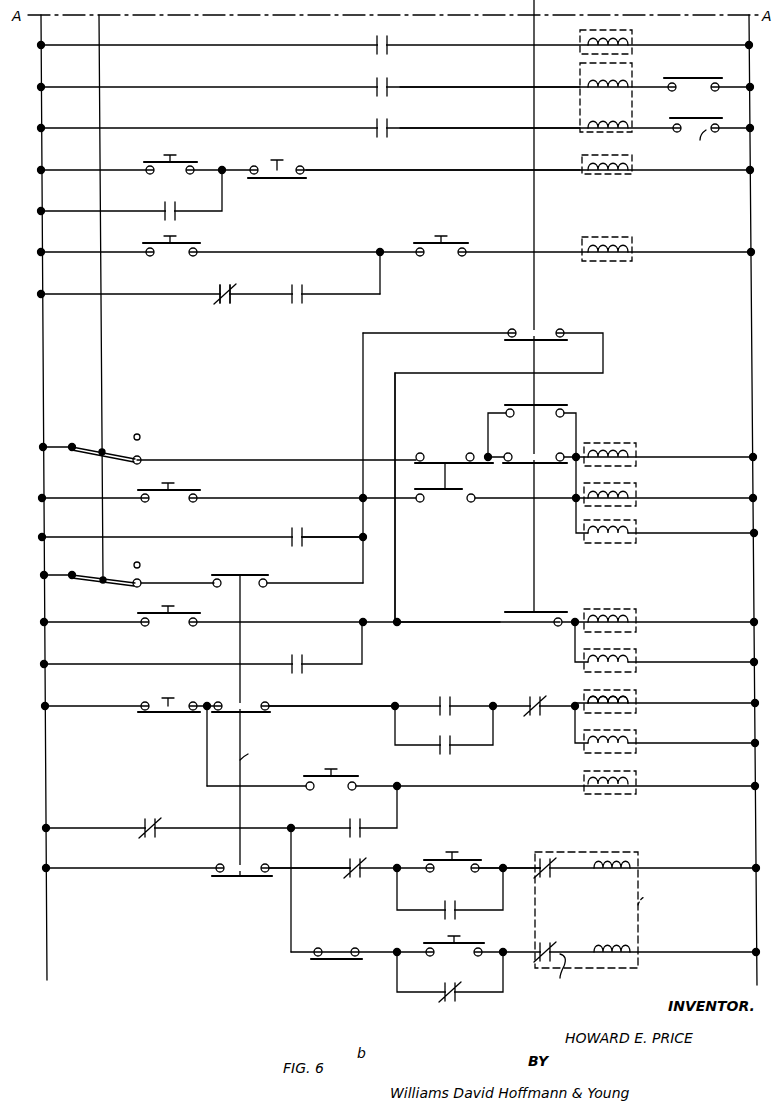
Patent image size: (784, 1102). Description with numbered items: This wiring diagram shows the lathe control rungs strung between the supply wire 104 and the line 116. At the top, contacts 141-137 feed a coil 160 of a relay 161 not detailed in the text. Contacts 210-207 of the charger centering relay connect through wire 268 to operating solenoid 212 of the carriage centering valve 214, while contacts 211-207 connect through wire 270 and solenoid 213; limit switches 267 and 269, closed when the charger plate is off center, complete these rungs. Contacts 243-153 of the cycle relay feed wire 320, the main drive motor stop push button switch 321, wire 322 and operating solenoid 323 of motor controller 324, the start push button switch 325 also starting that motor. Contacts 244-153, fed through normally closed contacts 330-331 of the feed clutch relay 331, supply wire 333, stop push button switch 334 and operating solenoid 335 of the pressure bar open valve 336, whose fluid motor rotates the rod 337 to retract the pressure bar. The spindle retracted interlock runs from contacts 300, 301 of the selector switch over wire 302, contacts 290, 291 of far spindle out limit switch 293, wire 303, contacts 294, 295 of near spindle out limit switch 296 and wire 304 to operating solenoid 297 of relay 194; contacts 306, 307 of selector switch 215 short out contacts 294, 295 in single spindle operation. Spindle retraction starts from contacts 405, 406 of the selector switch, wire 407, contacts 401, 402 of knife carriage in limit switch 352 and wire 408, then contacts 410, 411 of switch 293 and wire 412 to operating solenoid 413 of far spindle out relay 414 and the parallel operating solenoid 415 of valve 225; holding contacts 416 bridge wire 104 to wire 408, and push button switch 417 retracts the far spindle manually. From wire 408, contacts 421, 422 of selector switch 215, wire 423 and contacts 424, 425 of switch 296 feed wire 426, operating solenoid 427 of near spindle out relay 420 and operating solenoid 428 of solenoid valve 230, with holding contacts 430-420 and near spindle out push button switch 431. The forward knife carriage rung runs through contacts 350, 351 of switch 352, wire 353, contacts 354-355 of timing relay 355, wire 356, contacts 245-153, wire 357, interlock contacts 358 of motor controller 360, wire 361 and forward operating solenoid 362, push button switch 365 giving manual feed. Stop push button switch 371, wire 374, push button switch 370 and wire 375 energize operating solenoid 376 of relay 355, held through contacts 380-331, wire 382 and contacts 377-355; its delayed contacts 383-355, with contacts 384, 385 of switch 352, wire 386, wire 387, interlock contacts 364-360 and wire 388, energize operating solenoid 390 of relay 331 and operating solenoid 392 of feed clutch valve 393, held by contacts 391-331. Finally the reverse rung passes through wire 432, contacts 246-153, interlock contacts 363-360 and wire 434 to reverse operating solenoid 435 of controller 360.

The wire 104 is at (44, 382).
The line 116 is at (752, 338).
The selector switch 215 is at (540, 290).
The relay contact 141-137 is at (387, 34).
The relay coil 160 is at (586, 38).
The relay 161 is at (625, 34).
The contacts of charger centering relay 210-207 is at (387, 76).
The wire 268 is at (485, 76).
The operating solenoid 212 is at (586, 80).
The limit switch 267 is at (684, 78).
The contacts of charger centering relay 211-207 is at (387, 117).
The wire 270 is at (519, 130).
The operating solenoid 213 is at (586, 122).
The solenoid operated valve 214 is at (634, 124).
The limit switch 269 is at (713, 141).
The start push button switch 325 is at (172, 153).
The wire 320 is at (215, 168).
The main drive motor stop push button switch 321 is at (280, 158).
The wire 322 is at (488, 175).
The operating solenoid 323 is at (590, 168).
The motor controller 324 is at (632, 160).
The contacts of cycle relay 243-153 is at (185, 192).
The rod 337 is at (190, 242).
The stop push button switch 334 is at (444, 234).
The wire 333 is at (382, 282).
The contacts of lathe feed clutch relay 330-331 is at (228, 283).
The lathe feed clutch relay 331 is at (262, 310).
The contacts of cycle relay 244-153 is at (296, 306).
The operating solenoid 335 is at (590, 248).
The pressure bar open valve 336 is at (632, 236).
The contacts of selector switch 421 is at (508, 331).
The contacts of selector switch 422 is at (558, 325).
The near spindle out limit switch 296 is at (496, 558).
The contacts of selector switch 306 is at (498, 408).
The contacts of selector switch 307 is at (566, 410).
The wire 303 is at (482, 419).
The wire 302 is at (222, 454).
The contacts of selector switch 300 is at (88, 436).
The contacts of selector switch 301 is at (143, 450).
The contacts of far spindle out limit switch 290 is at (433, 448).
The contacts of far spindle out limit switch 291 is at (478, 448).
The contacts of near spindle out limit switch 294 is at (516, 448).
The contacts of near spindle out limit switch 295 is at (566, 448).
The operating solenoid 297 is at (620, 442).
The relay 194 is at (634, 448).
The far spindle out limit switch 293 is at (450, 480).
The wire 304 is at (572, 470).
The far spindle out push button switch 417 is at (172, 484).
The contacts of far spindle out limit switch 410 is at (424, 500).
The contacts of far spindle out limit switch 411 is at (467, 504).
The operating solenoid 413 is at (616, 490).
The relay 414 is at (636, 492).
The wire 412 is at (570, 522).
The operating solenoid 415 is at (618, 527).
The valve 225 is at (636, 530).
The contacts of relay 416 is at (292, 529).
The wire 408 is at (360, 536).
The contacts of selector switch 405 is at (88, 564).
The contacts of selector switch 406 is at (142, 577).
The wire 407 is at (212, 572).
The contacts of knife carriage in limit switch 401 is at (213, 588).
The contacts of knife carriage in limit switch 402 is at (263, 588).
The near spindle out push button switch 431 is at (138, 606).
The wire 423 is at (428, 630).
The contacts of near spindle out limit switch 424 is at (566, 634).
The contacts of near spindle out limit switch 425 is at (560, 630).
The operating solenoid 427 is at (610, 614).
The near spindle out relay 420 is at (636, 616).
The wire 426 is at (570, 658).
The operating solenoid 428 is at (618, 656).
The solenoid valve 230 is at (636, 660).
The contacts of near spindle out relay 430-420 is at (292, 653).
The stop push button switch 371 is at (152, 700).
The contacts of knife carriage in limit switch 384 is at (224, 692).
The contacts of knife carriage in limit switch 385 is at (265, 700).
The wire 386 is at (306, 704).
The delayed closing contacts of timer relay 383-355 is at (446, 694).
The interlock contacts of motor controller 364-360 is at (536, 694).
The operating solenoid 390 is at (618, 696).
The wire 388 is at (570, 740).
The wire 387 is at (493, 735).
The contacts of feed clutch relay 391-331 is at (445, 757).
The operating solenoid 392 is at (618, 736).
The feed clutch valve 393 is at (636, 740).
The knife carriage in limit switch 352 is at (257, 753).
The wire 374 is at (254, 784).
The push button switch 370 is at (344, 764).
The operating solenoid 376 is at (618, 777).
The timing relay 355 is at (636, 782).
The contacts of feed clutch relay 380-331 is at (150, 816).
The wire 382 is at (274, 818).
The relay contact 377-355 is at (355, 817).
The wire 375 is at (399, 822).
The contacts of knife into depth limit switch 350 is at (215, 862).
The contacts of knife into depth limit switch 351 is at (262, 862).
The wire 353 is at (320, 866).
The contacts of timing relay 354-355 is at (348, 850).
The knife carriage in push button switch 365 is at (452, 850).
The wire 357 is at (522, 866).
The wire 356 is at (398, 905).
The contacts of cycle relay 245-153 is at (448, 898).
The interlock contacts of motor controller 358 is at (552, 846).
The wire 361 is at (584, 868).
The forward operating solenoid 362 is at (628, 860).
The motor controller 360 is at (655, 895).
The interlock contacts of motor controller 363-360 is at (546, 938).
The reverse operating solenoid 435 is at (630, 948).
The wire 434 is at (577, 973).
The wire 432 is at (397, 990).
The contacts of cycle relay 246-153 is at (452, 1004).